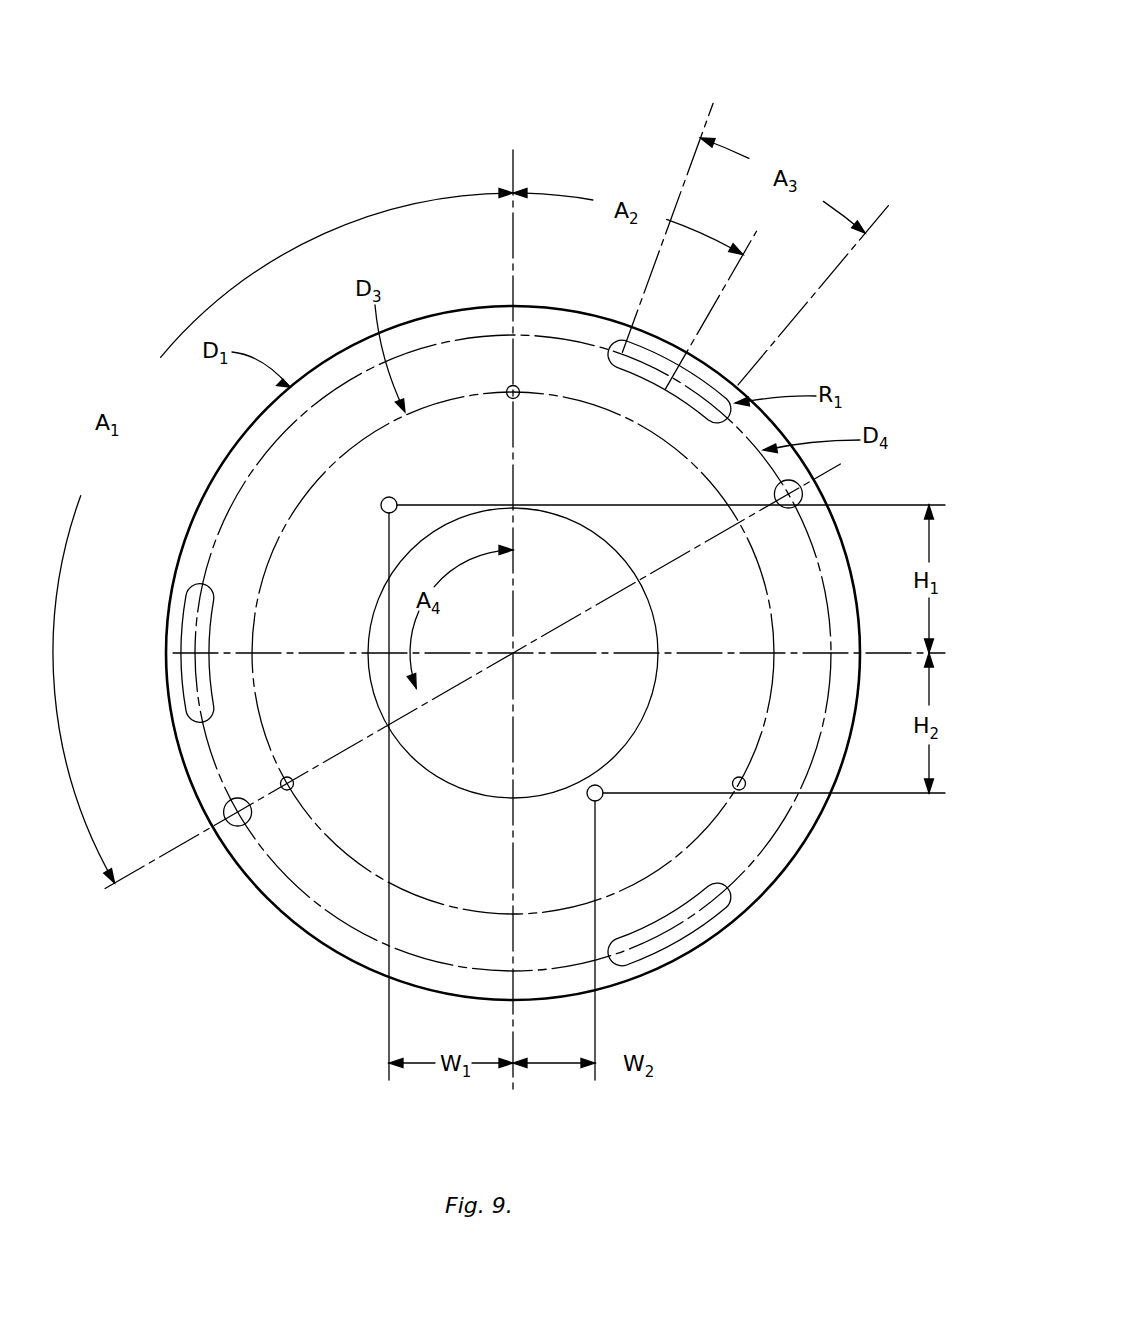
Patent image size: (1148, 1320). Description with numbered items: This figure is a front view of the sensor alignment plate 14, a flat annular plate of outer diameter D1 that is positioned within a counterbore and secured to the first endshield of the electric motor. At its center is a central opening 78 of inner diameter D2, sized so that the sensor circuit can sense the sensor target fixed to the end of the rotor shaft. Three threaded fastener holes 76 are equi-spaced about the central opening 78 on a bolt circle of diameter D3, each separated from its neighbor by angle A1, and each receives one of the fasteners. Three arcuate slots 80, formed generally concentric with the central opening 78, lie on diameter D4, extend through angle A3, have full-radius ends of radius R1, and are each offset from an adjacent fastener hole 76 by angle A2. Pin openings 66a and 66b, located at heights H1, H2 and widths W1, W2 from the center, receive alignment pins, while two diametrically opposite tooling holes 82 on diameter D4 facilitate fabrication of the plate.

The sensor alignment plate 14 is at (626, 86).
The pin opening 66a is at (395, 498).
The pin opening 66b is at (602, 799).
The fastener holes 76 is at (510, 386).
The central opening 78 is at (461, 793).
The arcuate slots 80 is at (184, 610).
The tooling holes 82 is at (803, 492).